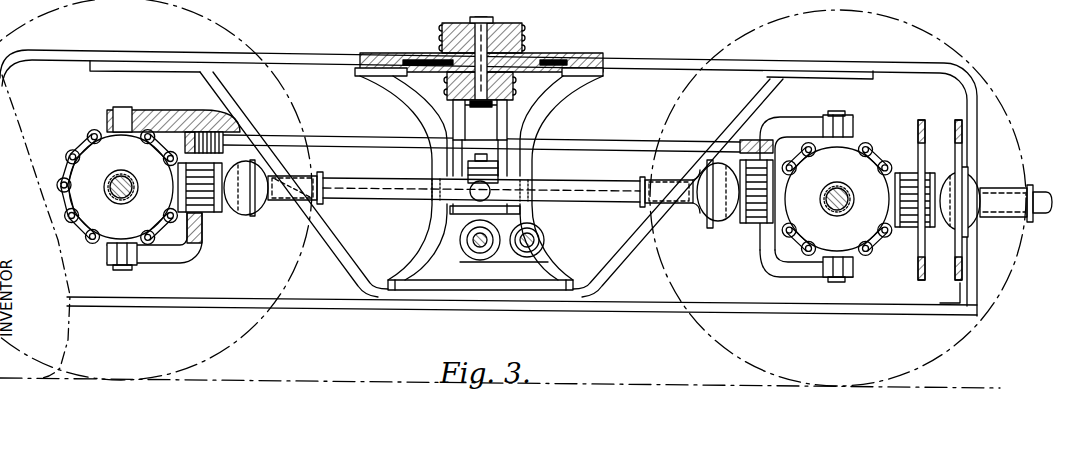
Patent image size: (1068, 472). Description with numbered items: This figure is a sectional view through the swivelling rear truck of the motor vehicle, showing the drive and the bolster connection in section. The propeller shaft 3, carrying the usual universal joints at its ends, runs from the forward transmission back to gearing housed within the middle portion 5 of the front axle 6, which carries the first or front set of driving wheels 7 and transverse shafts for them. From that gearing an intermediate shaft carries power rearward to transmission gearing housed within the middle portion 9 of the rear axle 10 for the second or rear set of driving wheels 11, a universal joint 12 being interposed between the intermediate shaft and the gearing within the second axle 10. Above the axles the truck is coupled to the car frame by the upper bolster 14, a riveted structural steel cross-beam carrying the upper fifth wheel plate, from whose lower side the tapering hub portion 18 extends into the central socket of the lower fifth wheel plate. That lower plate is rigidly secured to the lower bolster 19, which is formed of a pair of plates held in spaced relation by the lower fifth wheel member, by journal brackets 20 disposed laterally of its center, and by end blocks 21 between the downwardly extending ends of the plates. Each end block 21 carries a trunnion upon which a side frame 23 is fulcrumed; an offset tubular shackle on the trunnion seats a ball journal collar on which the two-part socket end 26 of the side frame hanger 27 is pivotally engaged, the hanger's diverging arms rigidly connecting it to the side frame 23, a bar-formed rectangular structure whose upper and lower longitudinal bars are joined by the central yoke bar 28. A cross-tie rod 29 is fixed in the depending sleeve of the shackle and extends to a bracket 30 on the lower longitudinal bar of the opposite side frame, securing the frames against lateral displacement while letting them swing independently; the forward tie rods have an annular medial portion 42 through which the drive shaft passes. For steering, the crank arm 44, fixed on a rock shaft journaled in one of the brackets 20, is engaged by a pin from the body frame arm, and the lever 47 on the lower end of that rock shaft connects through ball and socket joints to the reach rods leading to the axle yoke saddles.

The propeller shaft 3 is at (613, 187).
The middle portion of the front axle 5 is at (896, 196).
The front axle 6 is at (847, 183).
The front driving wheels 7 is at (909, 24).
The middle portion of the rear axle 9 is at (144, 188).
The rear axle 10 is at (115, 202).
The rear driving wheels 11 is at (253, 41).
The universal joint 12 is at (282, 205).
The upper bolster 14 is at (520, 33).
The tapering hub portion 18 is at (545, 58).
The lower bolster 19 is at (513, 97).
The journal brackets 20 is at (480, 120).
The end blocks 21 is at (540, 211).
The side frames 23 is at (173, 307).
The socket end 26 is at (540, 226).
The side frame hanger 27 is at (380, 248).
The central yoke bar 28 is at (613, 263).
The cross-tie rod 29 is at (477, 258).
The bracket 30 is at (515, 273).
The annular medial portion 42 is at (960, 158).
The crank arm 44 is at (570, 117).
The lever 47 is at (430, 167).